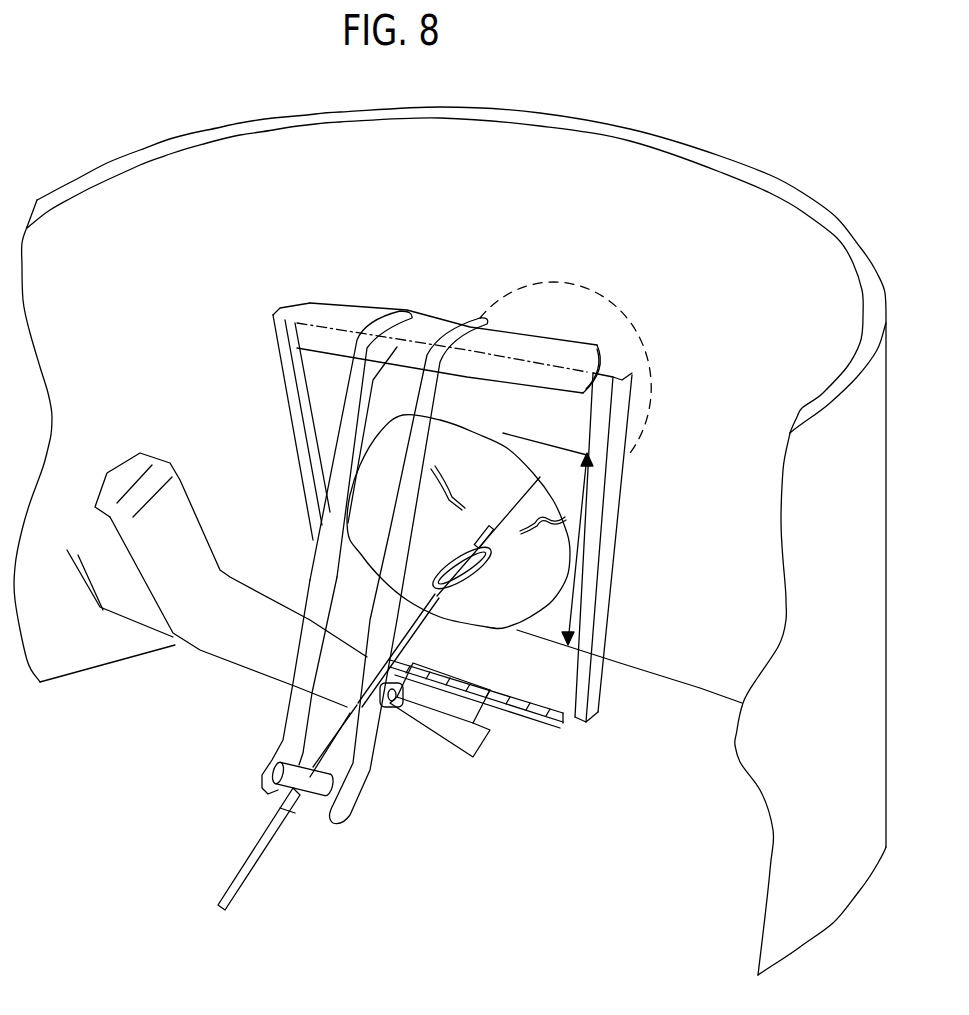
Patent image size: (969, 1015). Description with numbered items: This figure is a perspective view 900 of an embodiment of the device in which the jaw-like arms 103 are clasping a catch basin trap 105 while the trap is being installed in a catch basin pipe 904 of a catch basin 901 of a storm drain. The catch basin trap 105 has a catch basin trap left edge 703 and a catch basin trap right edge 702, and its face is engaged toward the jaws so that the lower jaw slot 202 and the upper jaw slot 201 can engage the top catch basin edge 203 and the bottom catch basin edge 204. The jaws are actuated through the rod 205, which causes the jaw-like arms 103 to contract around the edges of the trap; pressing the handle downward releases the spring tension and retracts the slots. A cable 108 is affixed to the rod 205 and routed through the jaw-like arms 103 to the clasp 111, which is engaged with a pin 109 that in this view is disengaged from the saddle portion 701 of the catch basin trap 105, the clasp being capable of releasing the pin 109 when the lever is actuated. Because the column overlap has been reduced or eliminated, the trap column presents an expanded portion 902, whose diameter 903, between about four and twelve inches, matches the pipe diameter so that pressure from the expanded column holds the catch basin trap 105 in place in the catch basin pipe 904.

The perspective view 900 is at (140, 112).
The catch basin 901 is at (705, 150).
The jaw-like arms 103 is at (220, 632).
The catch basin trap 105 is at (315, 362).
The cable 108 is at (412, 635).
The pin 109 is at (488, 530).
The clasp 111 is at (470, 582).
The upper jaw slot 201 is at (578, 350).
The lower jaw slot 202 is at (500, 705).
The top catch basin edge 203 is at (615, 375).
The bottom catch basin edge 204 is at (578, 727).
The rod 205 is at (312, 803).
The saddle portion 701 is at (543, 523).
The catch basin trap right edge 702 is at (617, 528).
The catch basin trap left edge 703 is at (293, 398).
The catch basin trap column expanded portion 902 is at (470, 610).
The diameter 903 is at (583, 505).
The catch basin pipe 904 is at (493, 627).